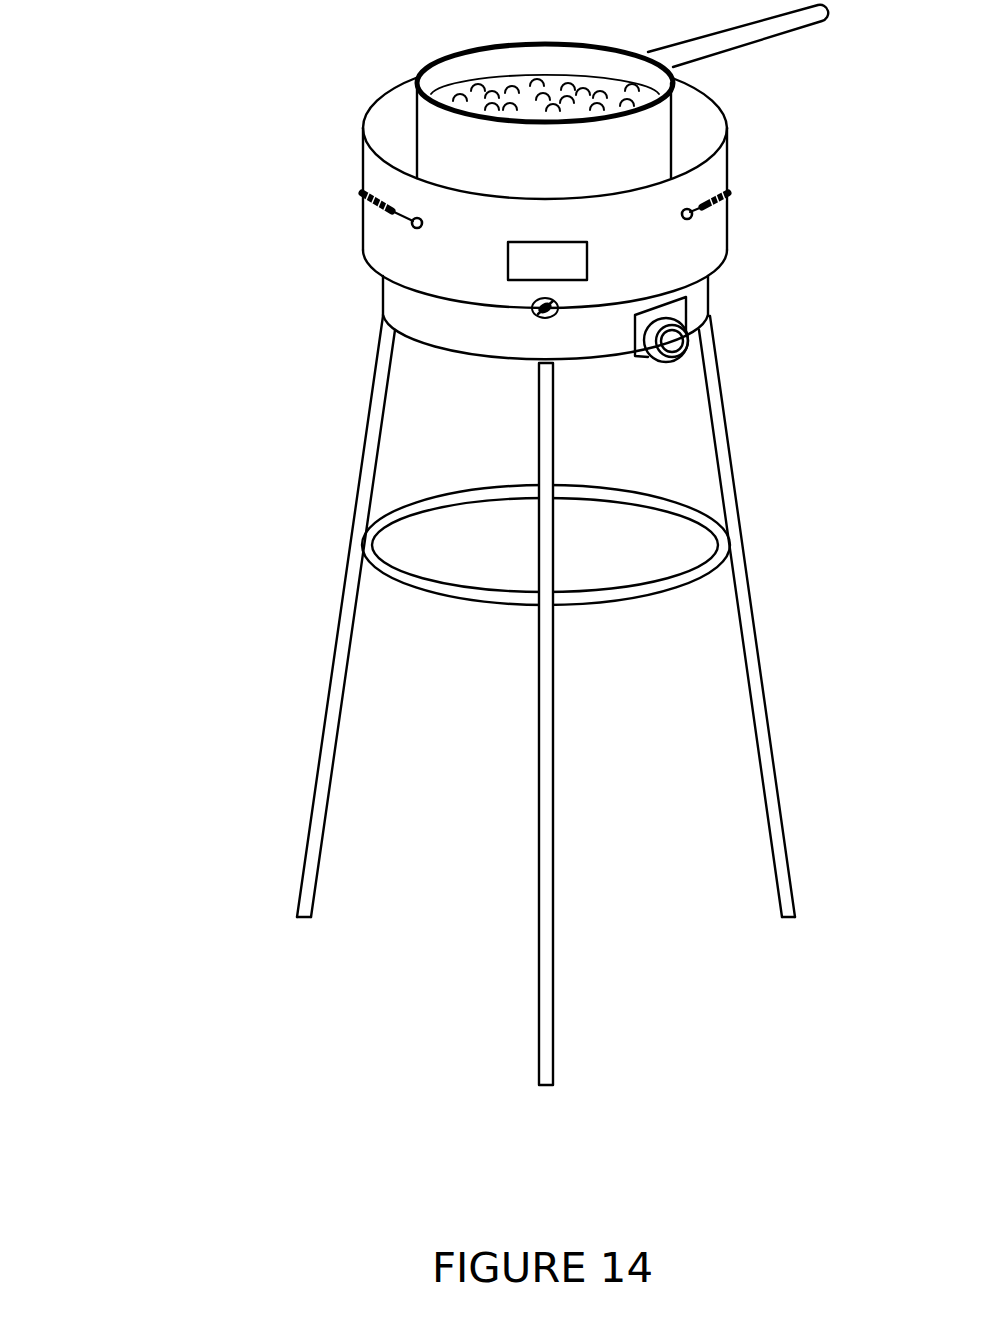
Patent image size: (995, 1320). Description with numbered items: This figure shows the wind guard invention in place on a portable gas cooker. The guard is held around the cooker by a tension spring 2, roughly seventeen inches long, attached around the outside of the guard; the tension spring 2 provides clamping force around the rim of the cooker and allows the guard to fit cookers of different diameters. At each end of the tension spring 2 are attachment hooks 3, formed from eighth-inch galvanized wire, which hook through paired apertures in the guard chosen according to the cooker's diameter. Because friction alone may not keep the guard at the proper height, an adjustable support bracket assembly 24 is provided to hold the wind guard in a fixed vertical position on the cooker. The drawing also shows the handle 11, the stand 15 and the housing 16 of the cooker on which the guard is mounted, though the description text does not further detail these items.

The tension spring 2 is at (374, 200).
The attachment hooks 3 is at (397, 213).
The handle 11 is at (777, 35).
The stand 15 is at (190, 232).
The burner housing 16 is at (697, 245).
The support bracket assembly 24 is at (530, 311).